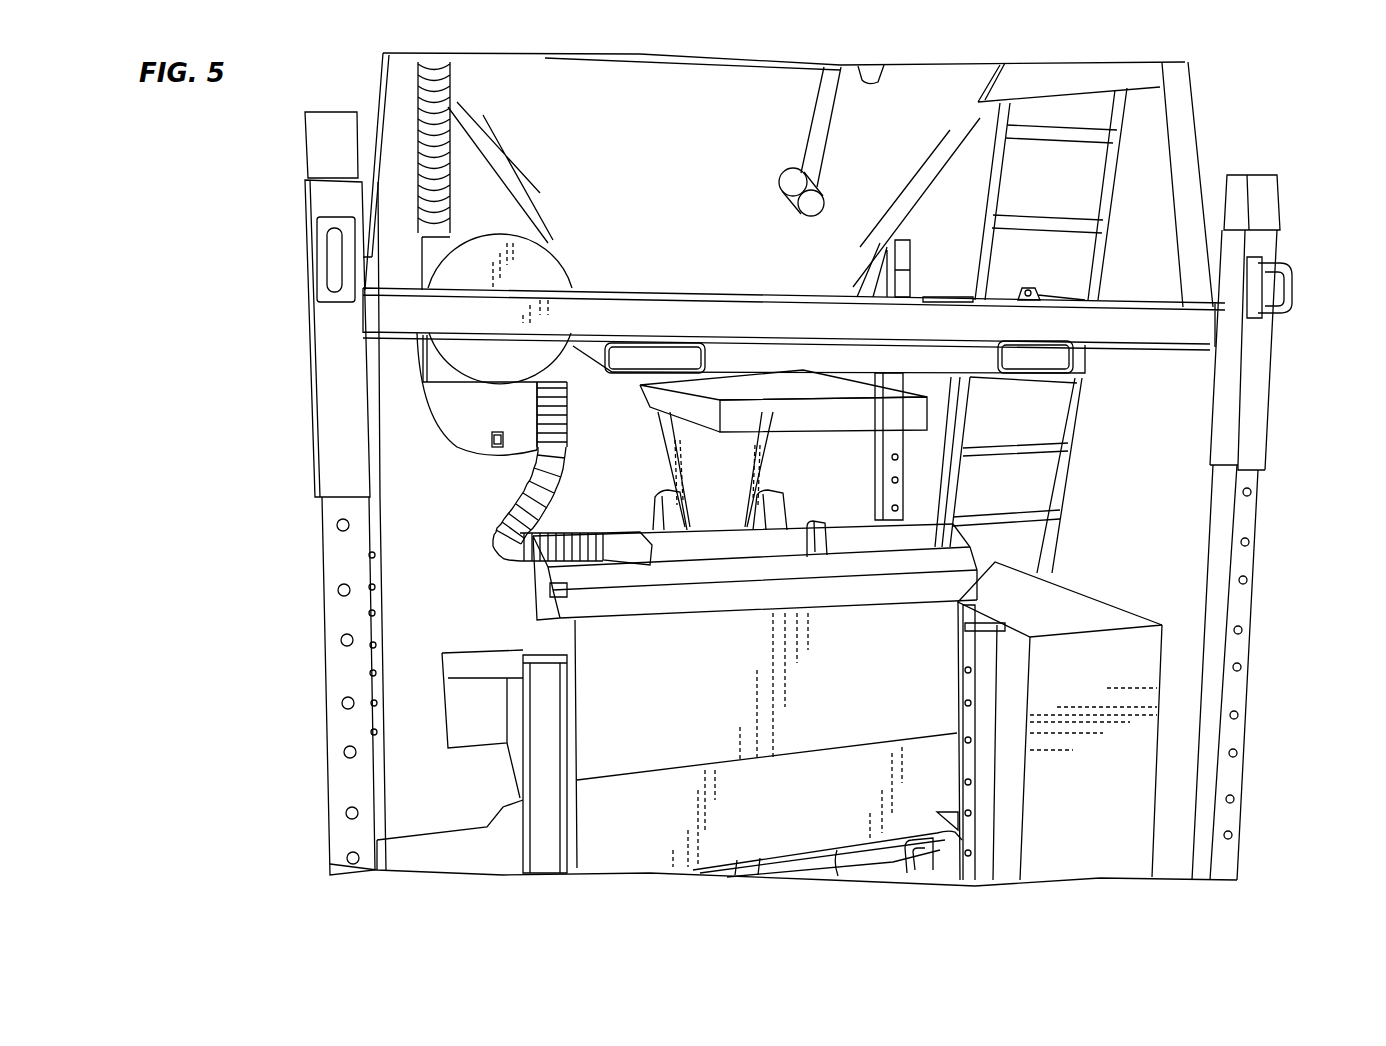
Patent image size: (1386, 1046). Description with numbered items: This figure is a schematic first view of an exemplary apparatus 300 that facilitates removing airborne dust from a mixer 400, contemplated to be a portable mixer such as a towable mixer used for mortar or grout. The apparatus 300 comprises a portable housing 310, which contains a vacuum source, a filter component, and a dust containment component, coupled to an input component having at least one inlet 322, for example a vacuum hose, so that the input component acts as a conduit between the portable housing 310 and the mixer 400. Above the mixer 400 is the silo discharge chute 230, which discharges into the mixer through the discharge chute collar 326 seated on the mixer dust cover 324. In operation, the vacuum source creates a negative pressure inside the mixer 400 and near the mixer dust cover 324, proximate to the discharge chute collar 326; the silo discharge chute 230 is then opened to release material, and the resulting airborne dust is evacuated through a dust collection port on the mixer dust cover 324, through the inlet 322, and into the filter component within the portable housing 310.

The apparatus 300 is at (478, 483).
The portable housing 310 is at (478, 354).
The inlet 322 is at (503, 547).
The silo discharge chute 230 is at (723, 507).
The discharge chute collar 326 is at (773, 507).
The mixer dust cover 324 is at (892, 547).
The mixer 400 is at (910, 695).